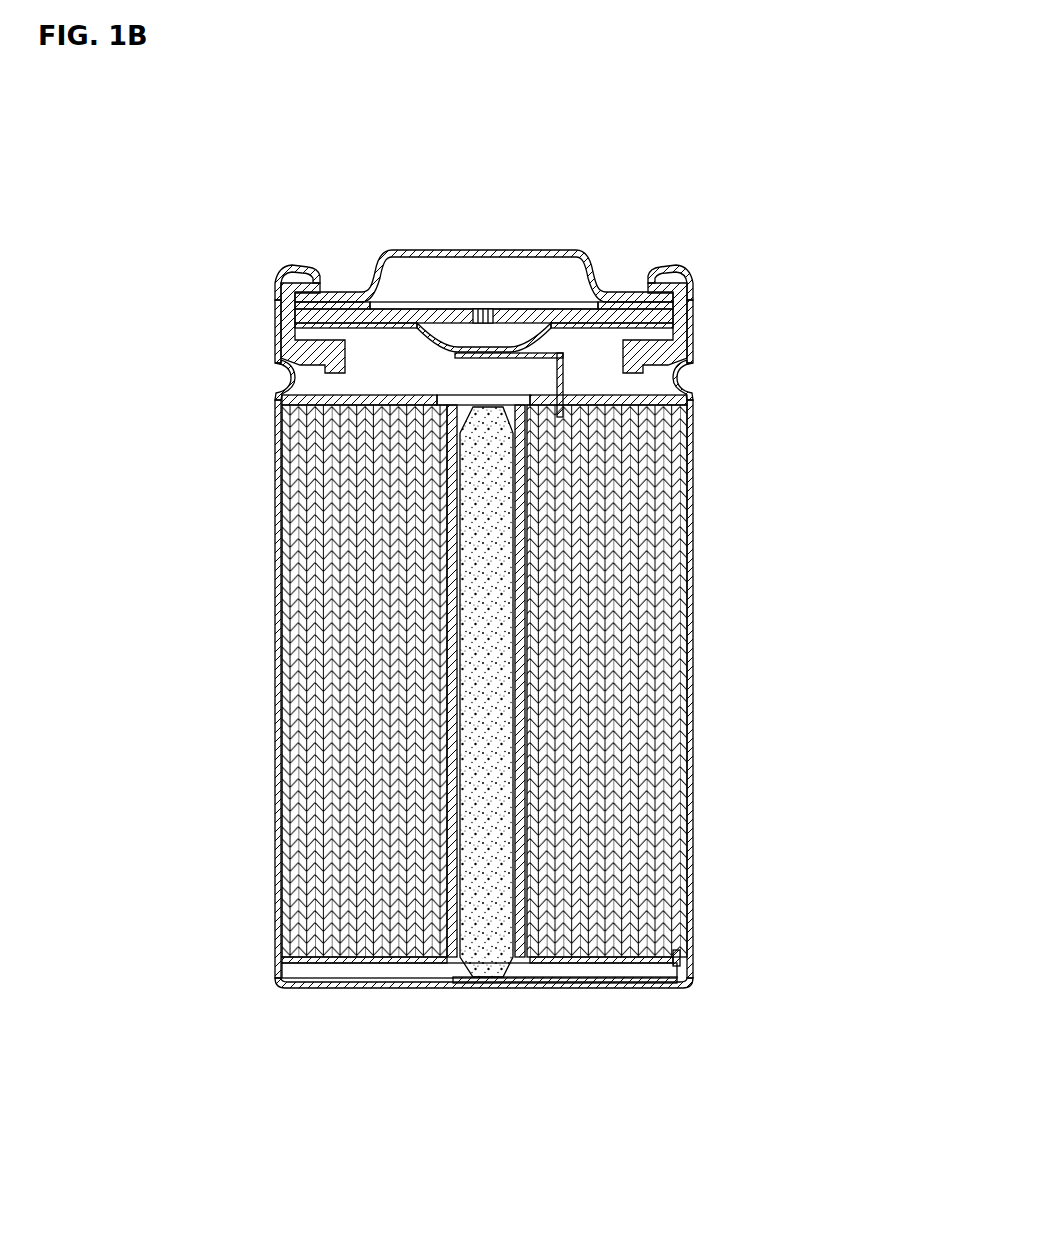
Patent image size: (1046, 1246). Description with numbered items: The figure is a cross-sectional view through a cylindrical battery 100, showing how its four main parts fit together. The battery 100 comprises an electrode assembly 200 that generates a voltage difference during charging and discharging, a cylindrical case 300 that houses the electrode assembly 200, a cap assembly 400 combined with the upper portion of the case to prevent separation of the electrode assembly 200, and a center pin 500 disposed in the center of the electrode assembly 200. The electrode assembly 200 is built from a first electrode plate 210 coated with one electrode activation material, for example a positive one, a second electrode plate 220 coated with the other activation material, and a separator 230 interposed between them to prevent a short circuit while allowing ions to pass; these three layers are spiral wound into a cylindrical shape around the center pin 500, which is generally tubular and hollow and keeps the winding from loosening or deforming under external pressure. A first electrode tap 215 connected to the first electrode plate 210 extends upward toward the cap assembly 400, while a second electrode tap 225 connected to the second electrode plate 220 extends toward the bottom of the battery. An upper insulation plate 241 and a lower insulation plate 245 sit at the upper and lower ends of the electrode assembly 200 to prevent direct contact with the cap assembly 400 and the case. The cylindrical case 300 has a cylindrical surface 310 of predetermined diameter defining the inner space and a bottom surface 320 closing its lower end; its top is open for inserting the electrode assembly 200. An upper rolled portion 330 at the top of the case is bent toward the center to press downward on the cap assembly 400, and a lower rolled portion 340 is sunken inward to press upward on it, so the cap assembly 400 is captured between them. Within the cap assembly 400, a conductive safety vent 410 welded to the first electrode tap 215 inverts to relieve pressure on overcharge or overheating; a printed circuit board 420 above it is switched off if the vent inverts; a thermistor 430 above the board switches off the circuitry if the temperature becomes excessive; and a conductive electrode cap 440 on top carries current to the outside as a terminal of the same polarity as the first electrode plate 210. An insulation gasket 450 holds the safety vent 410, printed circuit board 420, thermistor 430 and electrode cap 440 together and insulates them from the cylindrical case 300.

The cylindrical battery 100 is at (727, 224).
The electrode assembly 200 is at (818, 378).
The first electrode plate 210 is at (665, 537).
The first electrode tap 215 is at (557, 360).
The second electrode plate 220 is at (677, 452).
The second electrode tap 225 is at (587, 988).
The separator 230 is at (670, 505).
The upper insulation plate 241 is at (688, 396).
The lower insulation plate 245 is at (690, 966).
The cylindrical case 300 is at (152, 348).
The cylindrical surface 310 is at (275, 445).
The bottom surface 320 is at (310, 1000).
The upper rolled portion 330 is at (273, 272).
The lower rolled portion 340 is at (275, 372).
The cap assembly 400 is at (633, 158).
The conductive safety vent 410 is at (458, 350).
The printed circuit board 420 is at (517, 317).
The thermistor 430 is at (563, 305).
The conductive electrode cap 440 is at (395, 250).
The insulation gasket 450 is at (658, 272).
The center pin 500 is at (470, 983).